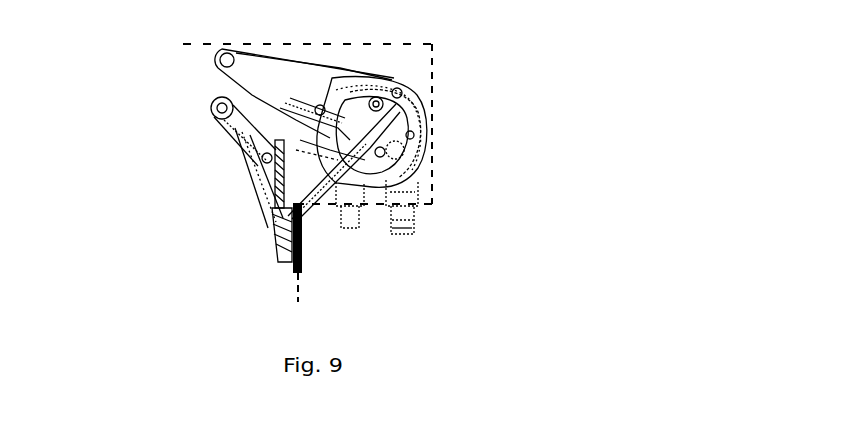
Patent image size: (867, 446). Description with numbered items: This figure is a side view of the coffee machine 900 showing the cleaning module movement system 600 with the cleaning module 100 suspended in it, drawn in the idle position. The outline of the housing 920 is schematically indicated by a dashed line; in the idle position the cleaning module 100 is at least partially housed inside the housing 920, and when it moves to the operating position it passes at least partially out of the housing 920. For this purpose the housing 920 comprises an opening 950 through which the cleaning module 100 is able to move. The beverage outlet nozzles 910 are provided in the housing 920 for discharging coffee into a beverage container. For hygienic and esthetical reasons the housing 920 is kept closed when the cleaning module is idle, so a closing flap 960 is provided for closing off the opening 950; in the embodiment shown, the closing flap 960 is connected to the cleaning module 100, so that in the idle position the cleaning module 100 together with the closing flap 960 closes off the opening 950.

The coffee machine 900 is at (722, 63).
The cleaning module movement system 600 is at (190, 136).
The cleaning module 100 is at (283, 254).
The housing 920 is at (432, 90).
The beverage outlet nozzles 910 is at (400, 231).
The opening 950 is at (296, 273).
The closing flap 960 is at (300, 271).